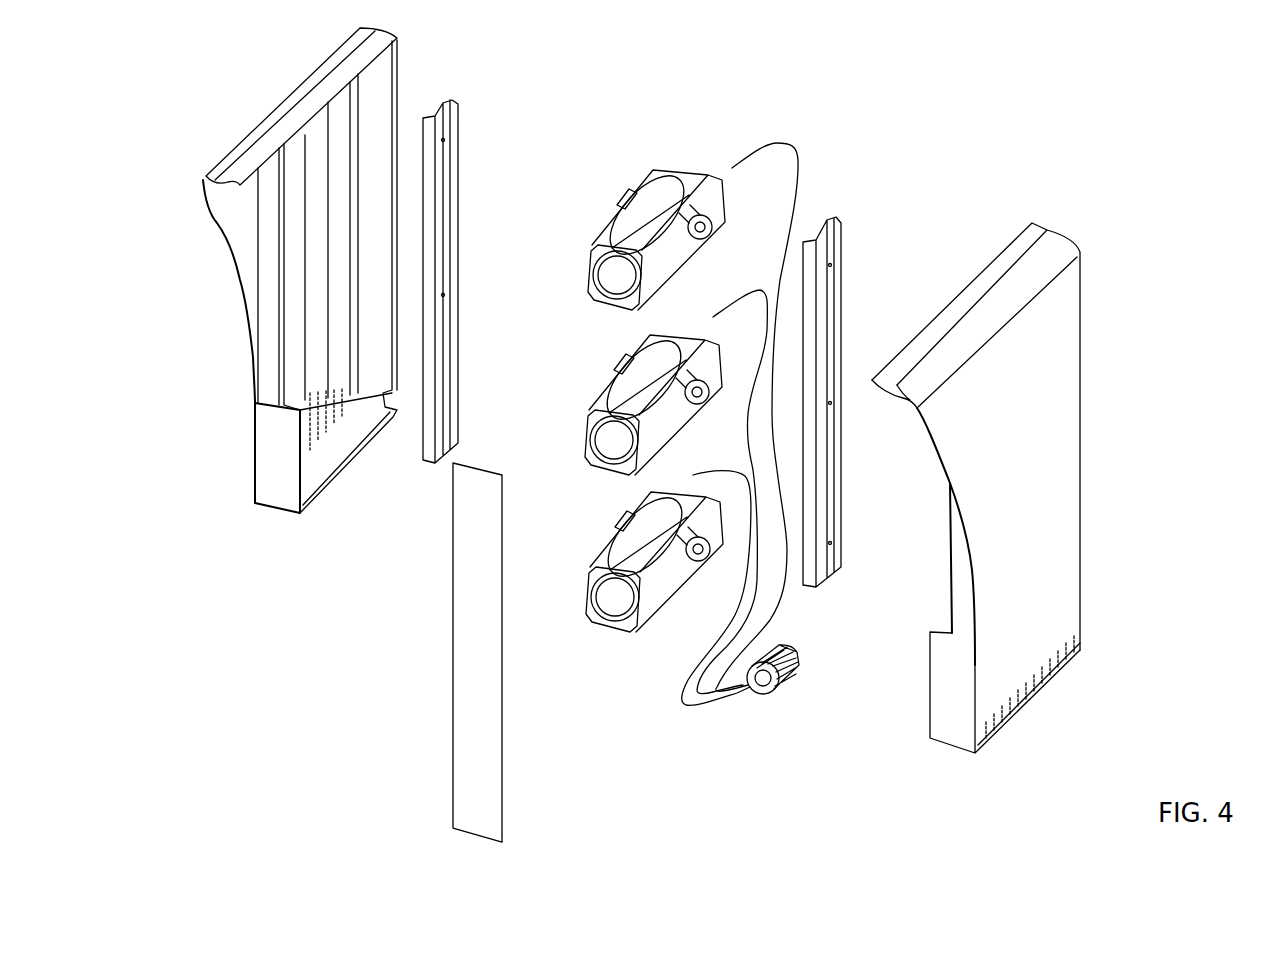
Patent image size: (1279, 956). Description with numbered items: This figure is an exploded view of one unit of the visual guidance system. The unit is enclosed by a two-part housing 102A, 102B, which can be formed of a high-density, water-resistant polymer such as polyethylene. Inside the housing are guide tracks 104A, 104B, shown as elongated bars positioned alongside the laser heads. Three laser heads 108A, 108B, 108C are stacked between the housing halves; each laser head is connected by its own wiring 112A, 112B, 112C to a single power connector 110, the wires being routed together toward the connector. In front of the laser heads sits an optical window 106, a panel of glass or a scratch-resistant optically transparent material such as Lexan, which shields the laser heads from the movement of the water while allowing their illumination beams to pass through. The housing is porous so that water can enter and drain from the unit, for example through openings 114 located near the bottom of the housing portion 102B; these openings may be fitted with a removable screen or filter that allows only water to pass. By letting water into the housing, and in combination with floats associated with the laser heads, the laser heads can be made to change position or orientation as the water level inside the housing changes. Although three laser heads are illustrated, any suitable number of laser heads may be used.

The housing 102A is at (248, 135).
The housing 102B is at (1060, 252).
The guide track 104A is at (450, 100).
The guide track 104B is at (837, 248).
The optical window 106 is at (463, 782).
The laser head 108A is at (692, 177).
The laser head 108B is at (697, 330).
The laser head 108C is at (697, 490).
The power connector 110 is at (797, 670).
The wiring 112A is at (759, 145).
The wiring 112B is at (762, 293).
The wiring 112C is at (745, 470).
The openings 114 is at (1103, 617).